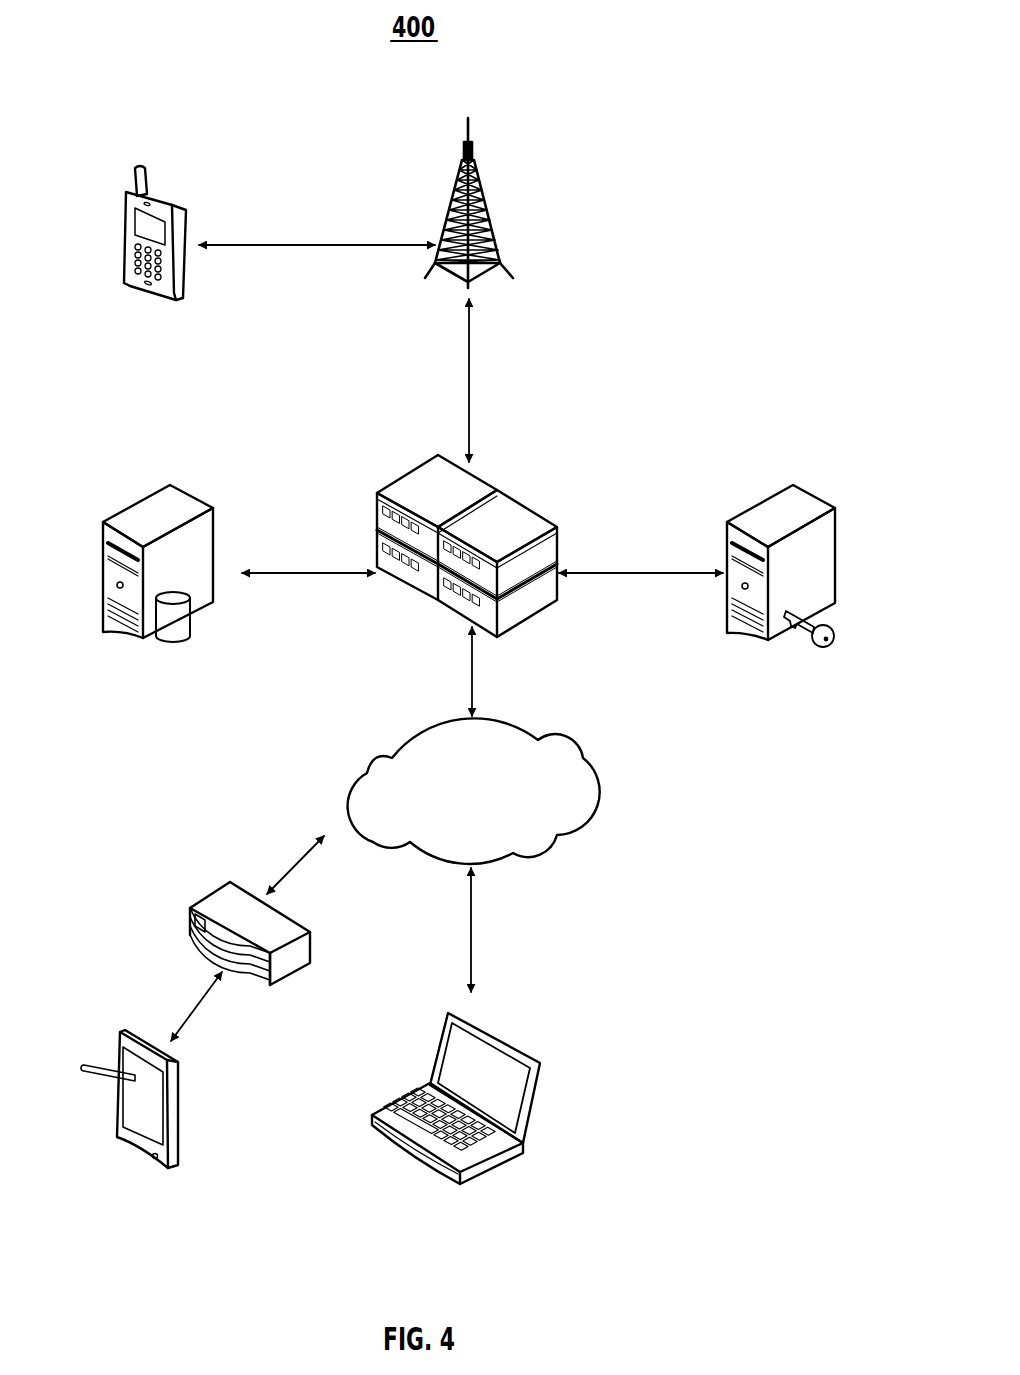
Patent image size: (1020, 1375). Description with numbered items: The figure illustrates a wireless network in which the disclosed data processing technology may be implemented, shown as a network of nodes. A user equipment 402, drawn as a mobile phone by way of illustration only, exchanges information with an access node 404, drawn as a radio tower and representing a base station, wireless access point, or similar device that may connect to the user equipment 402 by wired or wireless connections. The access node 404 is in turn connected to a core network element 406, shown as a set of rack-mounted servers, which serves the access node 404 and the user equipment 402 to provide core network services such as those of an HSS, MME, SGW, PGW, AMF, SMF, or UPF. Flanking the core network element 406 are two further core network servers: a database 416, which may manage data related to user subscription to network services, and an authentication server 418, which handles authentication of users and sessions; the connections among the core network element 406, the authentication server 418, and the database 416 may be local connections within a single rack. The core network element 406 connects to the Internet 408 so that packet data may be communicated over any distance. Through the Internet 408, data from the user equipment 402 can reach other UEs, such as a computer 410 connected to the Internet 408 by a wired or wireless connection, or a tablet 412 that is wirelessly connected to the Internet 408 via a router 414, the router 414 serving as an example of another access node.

The user equipment 402 is at (177, 207).
The access node 404 is at (480, 203).
The core network element 406 is at (490, 480).
The Internet 408 is at (577, 743).
The computer 410 is at (505, 1022).
The tablet 412 is at (130, 1020).
The router 414 is at (193, 907).
The database 416 is at (208, 503).
The authentication server 418 is at (777, 495).